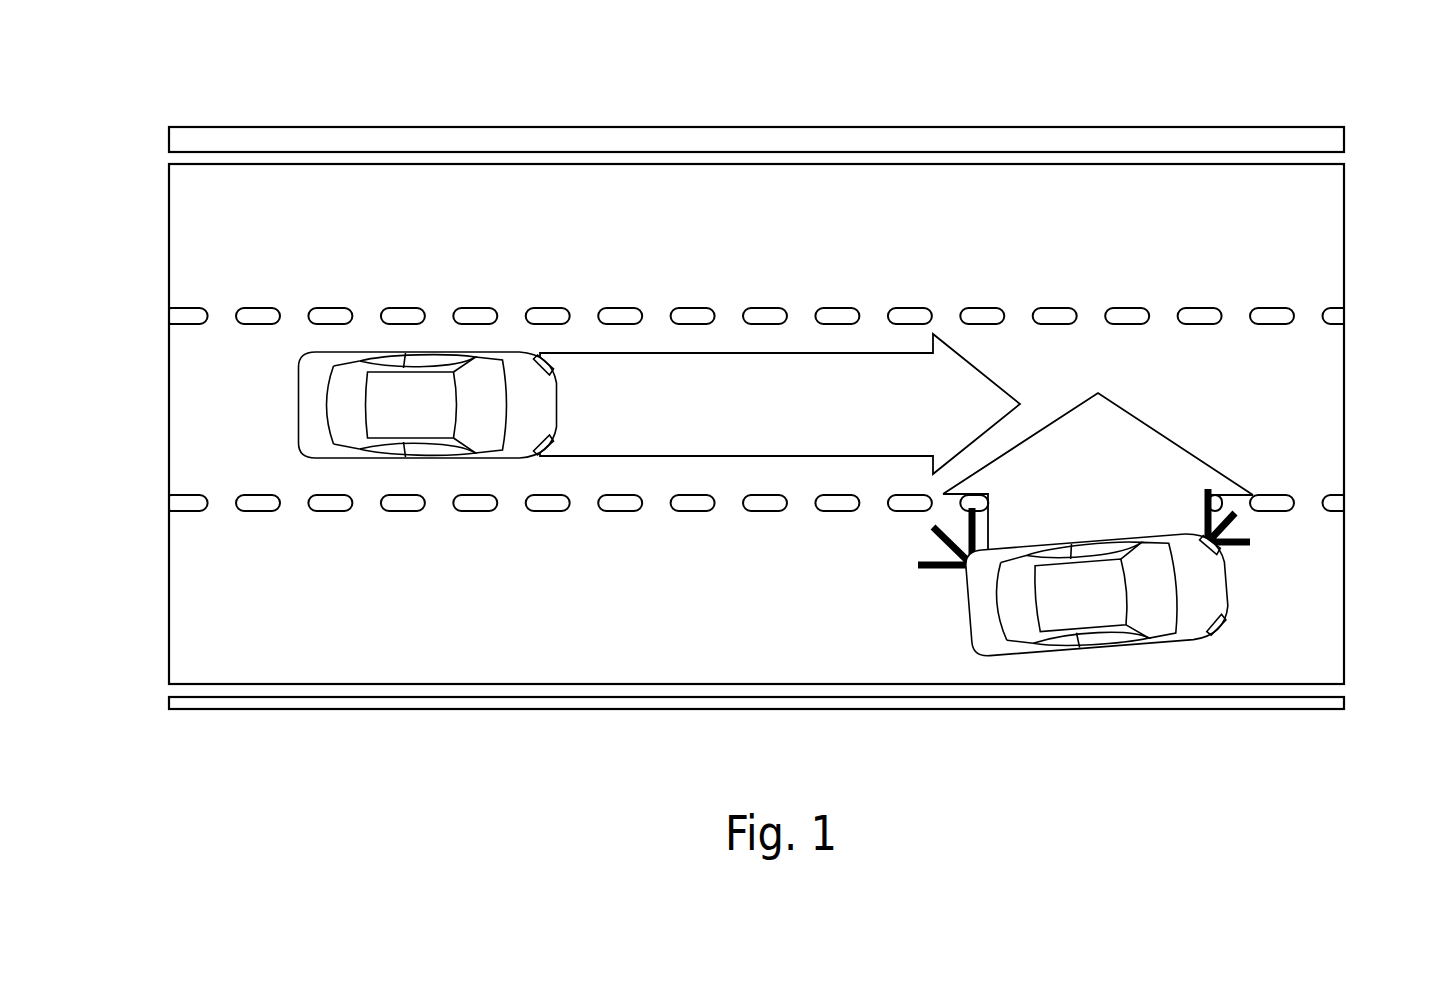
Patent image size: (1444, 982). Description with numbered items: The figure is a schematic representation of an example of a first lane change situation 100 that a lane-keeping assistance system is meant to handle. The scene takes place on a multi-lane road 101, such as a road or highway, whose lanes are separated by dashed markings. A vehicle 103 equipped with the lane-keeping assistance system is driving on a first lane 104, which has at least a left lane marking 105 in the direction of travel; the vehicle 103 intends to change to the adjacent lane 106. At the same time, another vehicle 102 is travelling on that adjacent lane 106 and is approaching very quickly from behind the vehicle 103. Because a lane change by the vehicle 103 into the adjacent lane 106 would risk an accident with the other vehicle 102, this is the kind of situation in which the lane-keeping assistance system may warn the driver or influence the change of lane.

The first lane change situation 100 is at (750, 391).
The multi-lane road 101 is at (169, 612).
The other vehicle 102 is at (398, 393).
The vehicle with the lane-keeping assistance system 103 is at (1067, 613).
The first lane 104 is at (1300, 580).
The left lane marking 105 is at (1262, 490).
The adjacent lane 106 is at (1308, 372).